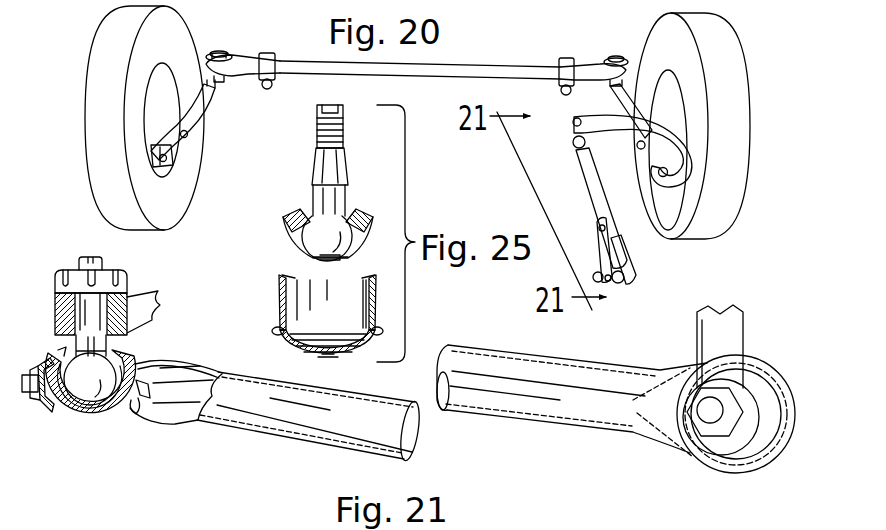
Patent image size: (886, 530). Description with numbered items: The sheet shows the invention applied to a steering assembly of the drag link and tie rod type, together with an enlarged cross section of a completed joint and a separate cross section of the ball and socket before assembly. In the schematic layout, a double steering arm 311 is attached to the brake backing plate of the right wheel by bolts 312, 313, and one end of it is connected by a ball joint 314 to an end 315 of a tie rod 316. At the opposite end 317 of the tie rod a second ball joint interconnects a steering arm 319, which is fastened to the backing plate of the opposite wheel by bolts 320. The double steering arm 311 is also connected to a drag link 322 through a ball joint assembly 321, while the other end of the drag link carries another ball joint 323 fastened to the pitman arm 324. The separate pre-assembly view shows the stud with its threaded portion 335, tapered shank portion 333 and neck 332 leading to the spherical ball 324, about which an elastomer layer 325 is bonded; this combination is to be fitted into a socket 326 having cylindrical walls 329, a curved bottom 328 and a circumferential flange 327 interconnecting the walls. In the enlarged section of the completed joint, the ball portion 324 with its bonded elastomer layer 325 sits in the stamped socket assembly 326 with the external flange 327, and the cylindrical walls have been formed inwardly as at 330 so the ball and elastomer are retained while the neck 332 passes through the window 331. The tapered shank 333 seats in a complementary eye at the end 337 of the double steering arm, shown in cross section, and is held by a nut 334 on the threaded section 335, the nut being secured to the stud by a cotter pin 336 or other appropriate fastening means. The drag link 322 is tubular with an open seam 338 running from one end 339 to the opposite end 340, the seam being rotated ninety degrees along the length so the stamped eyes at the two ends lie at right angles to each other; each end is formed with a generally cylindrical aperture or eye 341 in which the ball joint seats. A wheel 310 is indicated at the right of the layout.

In FIG. 20, the wheel 310 is at (742, 169).
In FIG. 20, the double steering arm 311 is at (677, 236).
In FIG. 20, the bolt 312 is at (660, 175).
In FIG. 20, the bolt 313 is at (643, 147).
In FIG. 20, the ball joint 314 is at (618, 54).
In FIG. 20, the end of tie rod 315 is at (585, 64).
In FIG. 20, the tie rod 316 is at (507, 65).
In FIG. 20, the opposite end of tie rod 317 is at (255, 58).
In FIG. 20, the steering arm 319 is at (202, 118).
In FIG. 20, the bolt 320 is at (167, 162).
In FIG. 20, the ball joint assembly 321 is at (575, 142).
In FIG. 20, the drag link 322 is at (598, 190).
In FIG. 20, the ball joint 323 is at (624, 280).
In FIG. 20, the spherical ball 324 is at (600, 276).
In FIG. 25, the spherical ball 324 is at (310, 223).
In FIG. 21, the spherical ball 324 is at (96, 406).
In FIG. 25, the elastomer layer 325 is at (363, 238).
In FIG. 21, the elastomer layer 325 is at (84, 424).
In FIG. 25, the socket 326 is at (278, 298).
In FIG. 21, the socket 326 is at (141, 363).
In FIG. 25, the flange 327 is at (275, 333).
In FIG. 21, the flange 327 is at (140, 412).
In FIG. 25, the curved bottom 328 is at (292, 346).
In FIG. 21, the curved bottom 328 is at (50, 412).
In FIG. 25, the cylindrical walls 329 is at (282, 281).
In FIG. 21, the cylindrical walls 329 is at (190, 376).
In FIG. 21, the inwardly formed walls 330 is at (118, 354).
In FIG. 21, the window 331 is at (58, 350).
In FIG. 25, the neck 332 is at (344, 204).
In FIG. 21, the neck 332 is at (106, 345).
In FIG. 25, the tapered shank portion 333 is at (347, 172).
In FIG. 21, the tapered shank portion 333 is at (132, 296).
In FIG. 21, the nut 334 is at (118, 272).
In FIG. 25, the threaded portion 335 is at (337, 132).
In FIG. 21, the threaded portion 335 is at (80, 258).
In FIG. 21, the cotter pin 336 is at (90, 257).
In FIG. 21, the end of double steering arm 337 is at (420, 428).
In FIG. 21, the open seam 338 is at (595, 400).
In FIG. 21, the end of drag link 339 is at (635, 427).
In FIG. 21, the opposite end of drag link 340 is at (235, 430).
In FIG. 21, the eye 341 is at (143, 390).